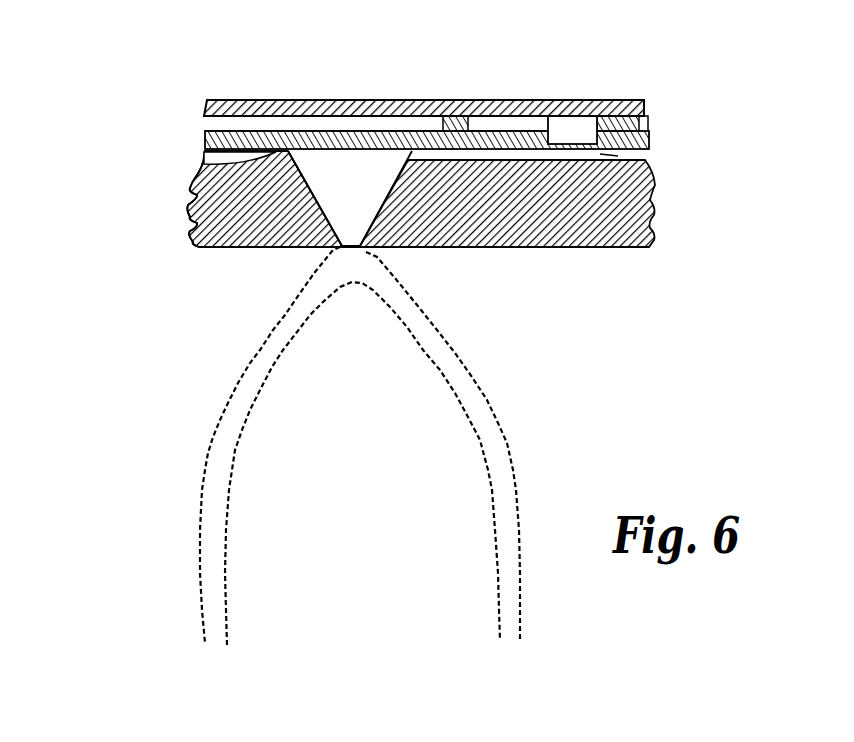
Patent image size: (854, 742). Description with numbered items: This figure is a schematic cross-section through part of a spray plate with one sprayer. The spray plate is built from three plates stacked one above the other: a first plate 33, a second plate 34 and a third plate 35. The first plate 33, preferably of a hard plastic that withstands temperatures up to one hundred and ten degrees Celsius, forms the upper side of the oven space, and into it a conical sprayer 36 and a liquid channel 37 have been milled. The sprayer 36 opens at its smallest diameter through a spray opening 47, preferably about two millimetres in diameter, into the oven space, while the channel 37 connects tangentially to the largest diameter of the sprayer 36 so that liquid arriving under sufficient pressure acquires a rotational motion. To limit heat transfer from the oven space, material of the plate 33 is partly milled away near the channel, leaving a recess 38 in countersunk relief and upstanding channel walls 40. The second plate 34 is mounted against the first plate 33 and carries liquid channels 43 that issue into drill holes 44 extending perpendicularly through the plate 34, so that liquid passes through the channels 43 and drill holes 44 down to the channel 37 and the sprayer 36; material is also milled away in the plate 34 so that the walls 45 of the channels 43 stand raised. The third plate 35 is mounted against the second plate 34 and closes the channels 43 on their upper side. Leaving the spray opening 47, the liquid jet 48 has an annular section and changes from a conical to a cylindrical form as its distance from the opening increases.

The first plate 33 is at (603, 215).
The second plate 34 is at (650, 133).
The third plate 35 is at (603, 103).
The conical sprayer 36 is at (348, 200).
The liquid channel 37 is at (647, 163).
The recess 38 is at (203, 153).
The channel wall 40 is at (195, 186).
The liquid channel 43 is at (503, 118).
The drill hole 44 is at (570, 130).
The wall of liquid channel 45 is at (448, 113).
The spray opening 47 is at (360, 248).
The liquid jet 48 is at (485, 413).